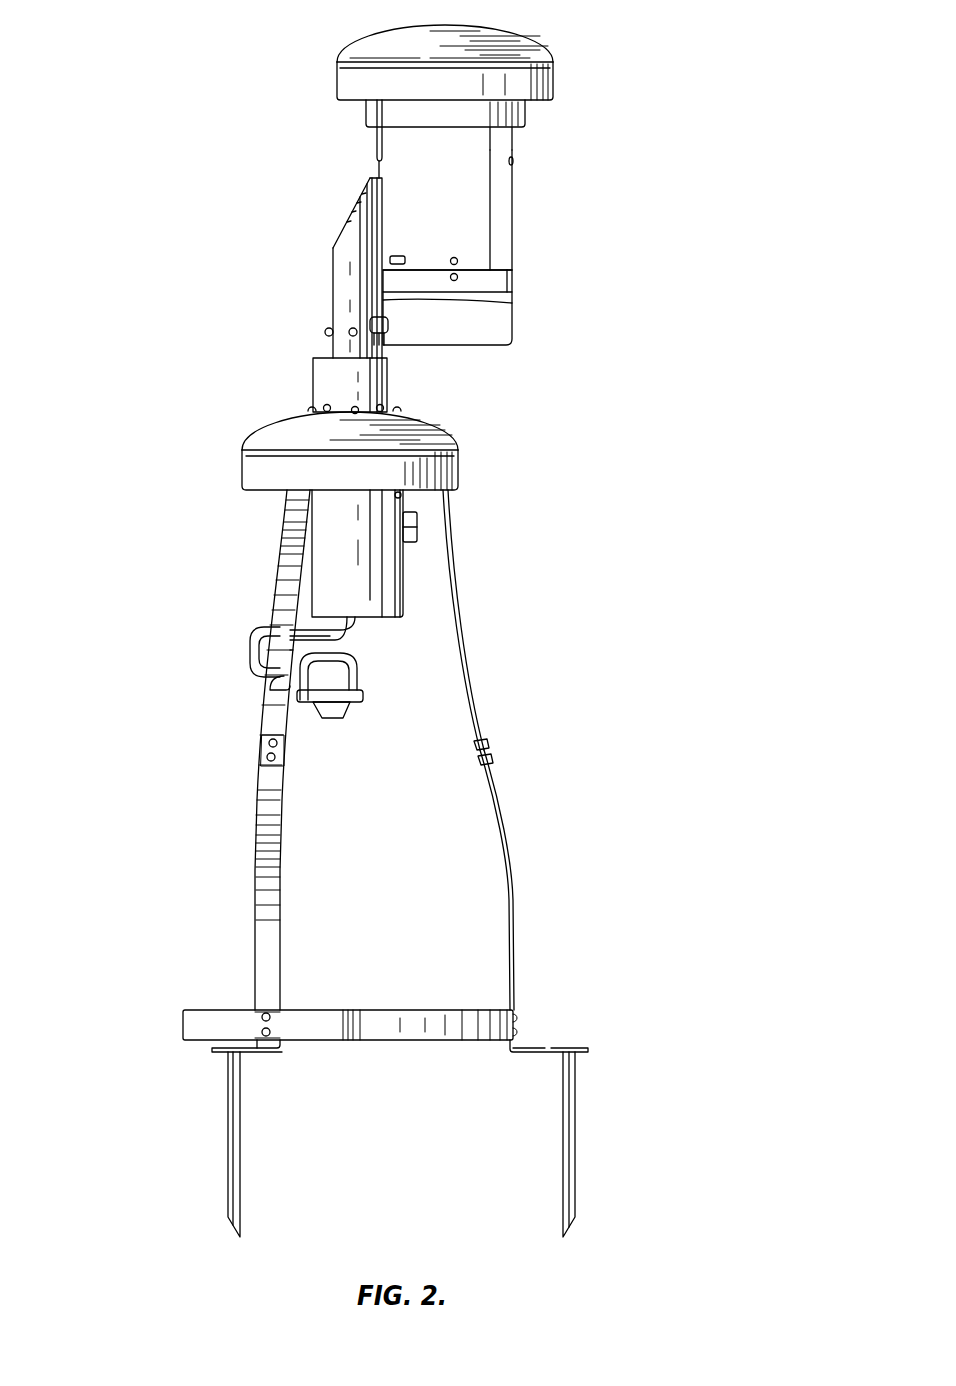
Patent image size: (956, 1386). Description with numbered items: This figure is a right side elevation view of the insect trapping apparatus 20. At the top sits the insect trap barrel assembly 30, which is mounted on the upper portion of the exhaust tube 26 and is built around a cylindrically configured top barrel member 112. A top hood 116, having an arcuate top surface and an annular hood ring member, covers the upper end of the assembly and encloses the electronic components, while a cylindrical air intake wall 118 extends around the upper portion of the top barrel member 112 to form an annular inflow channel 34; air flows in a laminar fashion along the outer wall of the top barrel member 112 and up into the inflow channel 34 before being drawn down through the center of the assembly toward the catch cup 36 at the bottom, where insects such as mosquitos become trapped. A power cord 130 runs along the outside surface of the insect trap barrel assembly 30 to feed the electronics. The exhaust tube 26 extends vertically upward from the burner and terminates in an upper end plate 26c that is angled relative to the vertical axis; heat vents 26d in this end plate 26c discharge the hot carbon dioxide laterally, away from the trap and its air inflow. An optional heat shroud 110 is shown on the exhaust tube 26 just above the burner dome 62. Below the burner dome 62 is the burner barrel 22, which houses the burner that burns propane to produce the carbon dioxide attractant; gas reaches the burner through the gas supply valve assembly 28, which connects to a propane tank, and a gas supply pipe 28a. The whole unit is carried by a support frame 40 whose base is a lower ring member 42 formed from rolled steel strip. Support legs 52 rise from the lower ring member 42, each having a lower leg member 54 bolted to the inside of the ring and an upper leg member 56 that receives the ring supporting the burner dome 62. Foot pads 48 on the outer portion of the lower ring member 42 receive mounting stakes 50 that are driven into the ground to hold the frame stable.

The insect trapping apparatus 20 is at (613, 177).
The top hood 116 is at (515, 45).
The air intake wall 118 is at (366, 112).
The inflow channel 34 is at (513, 128).
The insect trap barrel assembly 30 is at (535, 213).
The top barrel member 112 is at (449, 205).
The power cord 130 is at (383, 302).
The catch cup 36 is at (485, 325).
The exhaust tube 26 is at (332, 286).
The upper end plate 26c is at (337, 235).
The heat vents 26d is at (357, 203).
The heat shroud 110 is at (368, 390).
The burner dome 62 is at (442, 443).
The support frame 40 is at (605, 803).
The burner barrel 22 is at (350, 553).
The gas supply pipe 28a is at (252, 643).
The gas supply valve assembly 28 is at (360, 690).
The support legs 52 is at (257, 807).
The upper leg member 56 is at (460, 625).
The lower leg member 54 is at (512, 897).
The lower ring member 42 is at (495, 1015).
The foot pads 48 is at (535, 1050).
The mounting stakes 50 is at (575, 1105).